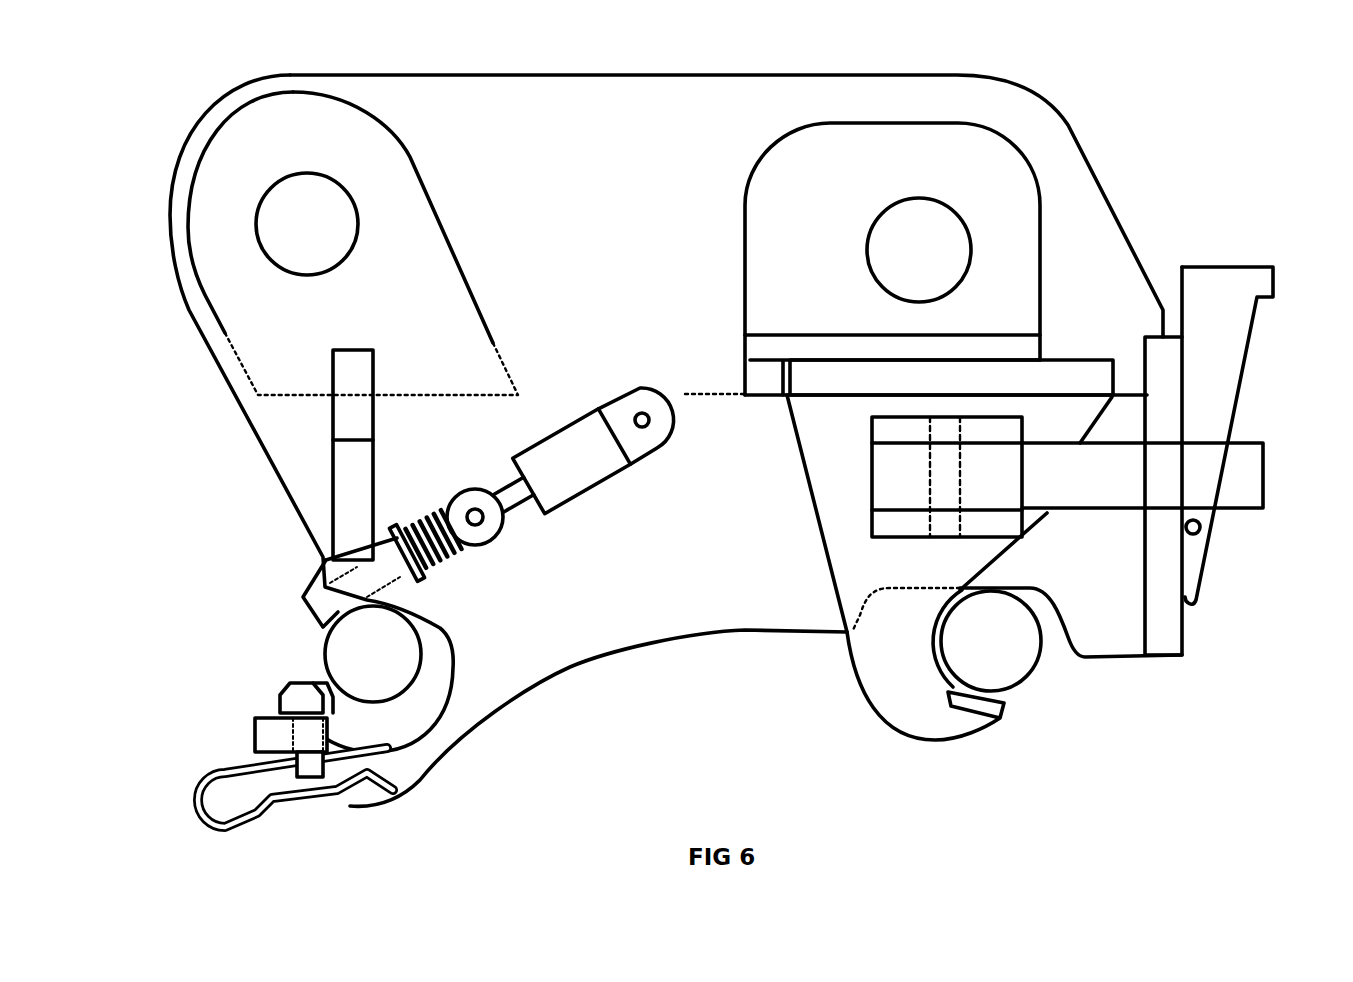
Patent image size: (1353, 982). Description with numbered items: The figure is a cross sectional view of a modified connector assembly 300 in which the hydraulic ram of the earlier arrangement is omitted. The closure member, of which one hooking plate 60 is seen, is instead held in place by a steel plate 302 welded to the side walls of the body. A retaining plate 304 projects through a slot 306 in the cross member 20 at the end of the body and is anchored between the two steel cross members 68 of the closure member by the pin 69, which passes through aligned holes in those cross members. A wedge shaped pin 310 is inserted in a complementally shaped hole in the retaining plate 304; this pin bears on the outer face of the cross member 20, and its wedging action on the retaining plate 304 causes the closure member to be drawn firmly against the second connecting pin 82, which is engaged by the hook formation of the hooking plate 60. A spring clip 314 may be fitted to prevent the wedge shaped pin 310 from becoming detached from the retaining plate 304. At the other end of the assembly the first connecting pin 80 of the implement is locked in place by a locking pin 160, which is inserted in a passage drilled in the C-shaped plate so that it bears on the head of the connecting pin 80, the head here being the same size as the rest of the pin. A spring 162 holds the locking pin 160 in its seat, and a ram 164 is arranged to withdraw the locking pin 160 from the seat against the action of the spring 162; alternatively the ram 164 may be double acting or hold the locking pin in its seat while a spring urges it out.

The cross member 20 is at (1163, 630).
The hooking plate 60 is at (835, 520).
The cross members 68 is at (885, 527).
The pin 69 is at (962, 478).
The connecting pin 80 is at (345, 660).
The connecting pin 82 is at (1018, 662).
The locking pin 160 is at (325, 607).
The spring 162 is at (397, 530).
The ram 164 is at (593, 477).
The connector assembly 300 is at (218, 455).
The steel plate 302 is at (1000, 340).
The retaining plate 304 is at (1087, 513).
The slot 306 is at (1167, 443).
The wedge shaped pin 310 is at (1225, 362).
The spring clip 314 is at (1200, 530).